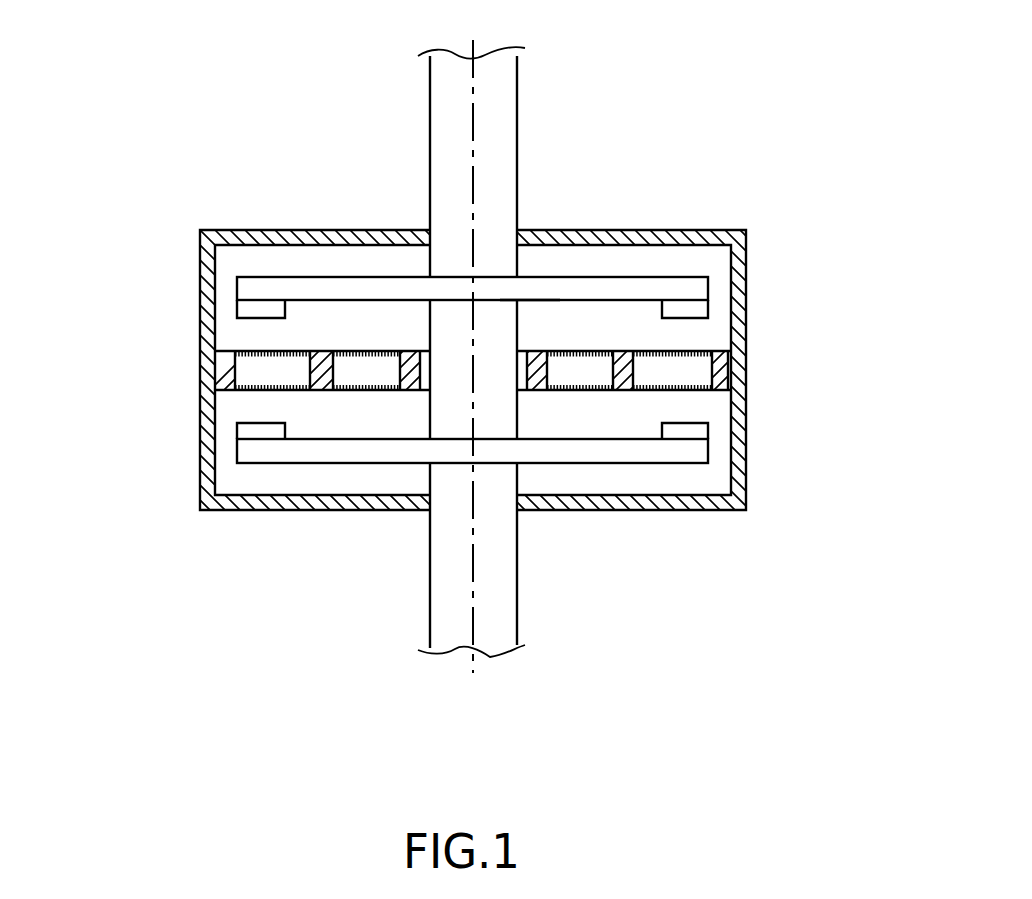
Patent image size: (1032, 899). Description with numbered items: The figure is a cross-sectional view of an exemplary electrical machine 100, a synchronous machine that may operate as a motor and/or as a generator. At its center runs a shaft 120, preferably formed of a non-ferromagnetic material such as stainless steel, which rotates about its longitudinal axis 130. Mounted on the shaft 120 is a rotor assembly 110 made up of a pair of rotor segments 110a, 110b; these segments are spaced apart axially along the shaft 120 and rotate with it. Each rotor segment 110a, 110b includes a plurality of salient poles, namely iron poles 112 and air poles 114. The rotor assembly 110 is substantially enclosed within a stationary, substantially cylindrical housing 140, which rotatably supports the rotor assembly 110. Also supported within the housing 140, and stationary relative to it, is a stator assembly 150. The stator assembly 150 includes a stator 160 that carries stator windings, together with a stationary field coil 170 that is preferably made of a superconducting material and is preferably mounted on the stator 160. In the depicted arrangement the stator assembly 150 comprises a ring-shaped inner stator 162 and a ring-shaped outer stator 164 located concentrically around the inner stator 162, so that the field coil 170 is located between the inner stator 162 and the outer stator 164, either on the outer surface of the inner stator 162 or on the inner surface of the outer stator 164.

The electrical machine 100 is at (674, 130).
The rotor assembly 110 is at (245, 287).
The rotor segment 110a is at (677, 277).
The rotor segment 110b is at (693, 463).
The iron pole 112 is at (687, 320).
The air pole 114 is at (544, 300).
The shaft 120 is at (427, 628).
The longitudinal axis 130 is at (472, 580).
The housing 140 is at (740, 270).
The stator assembly 150 is at (748, 375).
The stator 160 is at (655, 350).
The inner stator 162 is at (410, 350).
The outer stator 164 is at (215, 350).
The field coil 170 is at (622, 377).